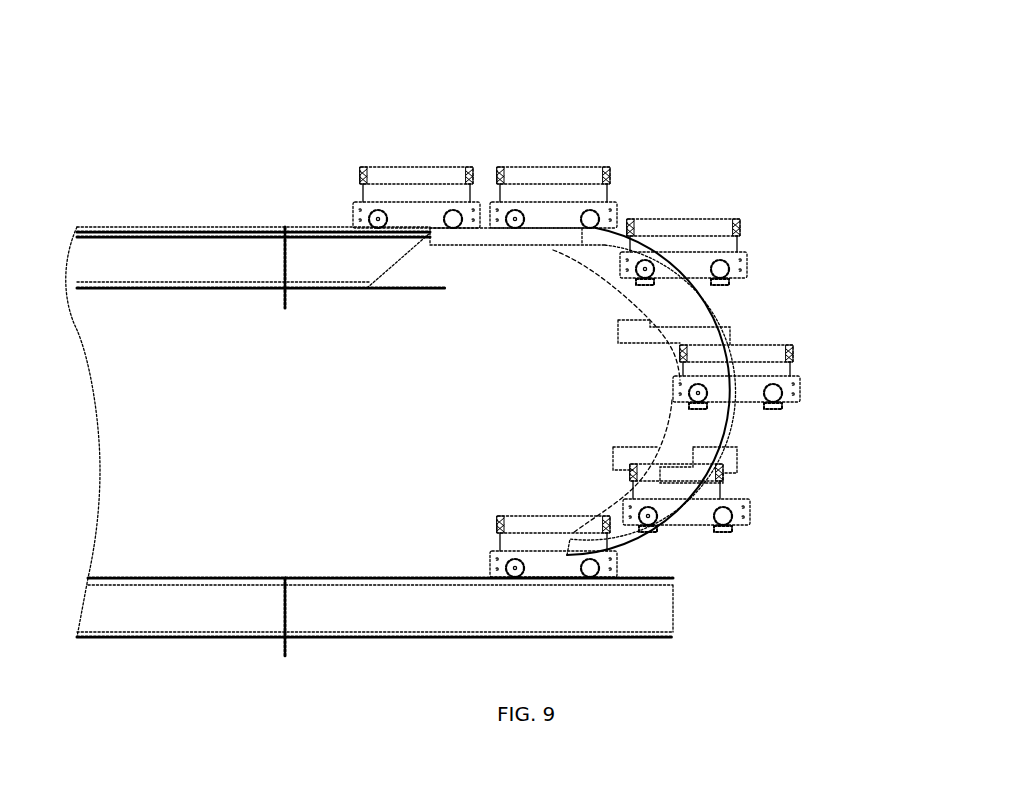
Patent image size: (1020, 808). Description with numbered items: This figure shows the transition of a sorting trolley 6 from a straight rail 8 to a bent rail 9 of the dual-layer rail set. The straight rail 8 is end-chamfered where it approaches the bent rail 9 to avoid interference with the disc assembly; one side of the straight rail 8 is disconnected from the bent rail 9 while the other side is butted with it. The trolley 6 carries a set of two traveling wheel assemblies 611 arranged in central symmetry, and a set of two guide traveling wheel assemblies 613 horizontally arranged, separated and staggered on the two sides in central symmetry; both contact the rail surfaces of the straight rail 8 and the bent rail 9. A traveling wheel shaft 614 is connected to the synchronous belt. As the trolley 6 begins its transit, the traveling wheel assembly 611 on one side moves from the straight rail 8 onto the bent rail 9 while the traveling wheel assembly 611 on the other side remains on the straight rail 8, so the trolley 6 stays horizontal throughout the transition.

The straight rail 8 is at (142, 242).
The sorting trolley 6 is at (540, 178).
The guide traveling wheel assembly 613 is at (445, 288).
The bent rail 9 is at (603, 260).
The traveling wheel assembly 611 is at (777, 397).
The traveling wheel shaft 614 is at (700, 395).